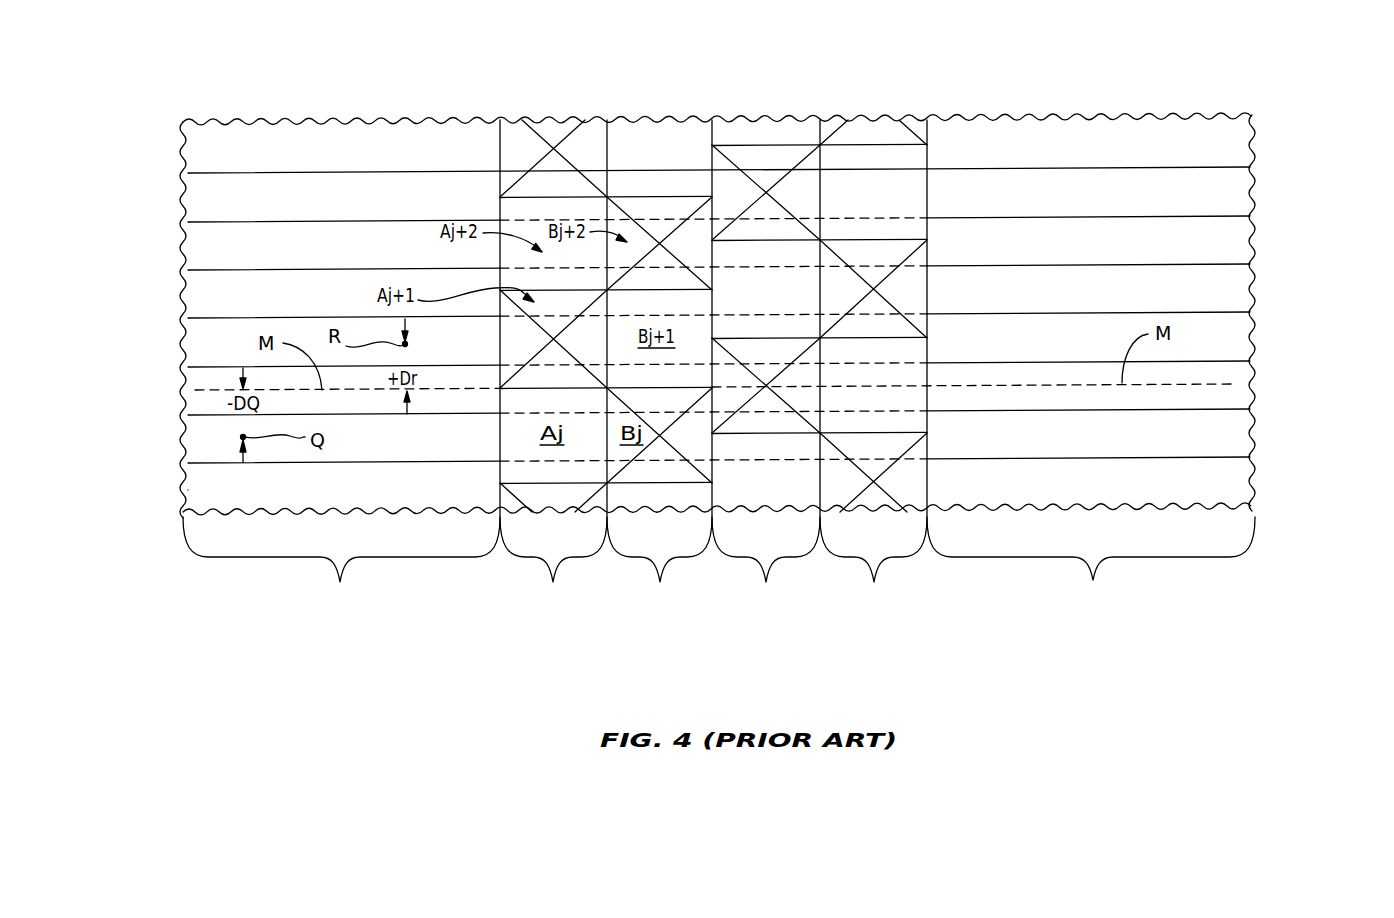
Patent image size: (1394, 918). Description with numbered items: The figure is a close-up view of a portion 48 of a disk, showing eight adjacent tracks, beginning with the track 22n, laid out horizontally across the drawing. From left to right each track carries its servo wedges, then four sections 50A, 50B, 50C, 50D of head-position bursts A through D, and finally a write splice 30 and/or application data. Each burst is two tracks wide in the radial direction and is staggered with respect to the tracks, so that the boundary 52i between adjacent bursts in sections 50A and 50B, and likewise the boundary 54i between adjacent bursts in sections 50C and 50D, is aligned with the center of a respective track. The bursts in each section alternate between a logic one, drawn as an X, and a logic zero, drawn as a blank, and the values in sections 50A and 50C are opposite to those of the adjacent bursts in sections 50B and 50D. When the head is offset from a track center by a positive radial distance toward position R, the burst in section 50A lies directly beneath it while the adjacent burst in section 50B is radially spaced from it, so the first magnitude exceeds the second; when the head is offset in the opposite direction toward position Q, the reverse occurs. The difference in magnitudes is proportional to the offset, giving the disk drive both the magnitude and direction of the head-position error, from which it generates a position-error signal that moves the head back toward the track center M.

The portion of the disk 48 is at (767, 72).
The track 22n is at (200, 487).
The burst section A 50A is at (553, 366).
The burst section B 50B is at (659, 366).
The burst section C 50C is at (766, 366).
The burst section D 50D is at (873, 366).
The burst boundary 52i is at (560, 483).
The burst boundary 54i is at (875, 433).
The write splice 30 is at (1091, 576).